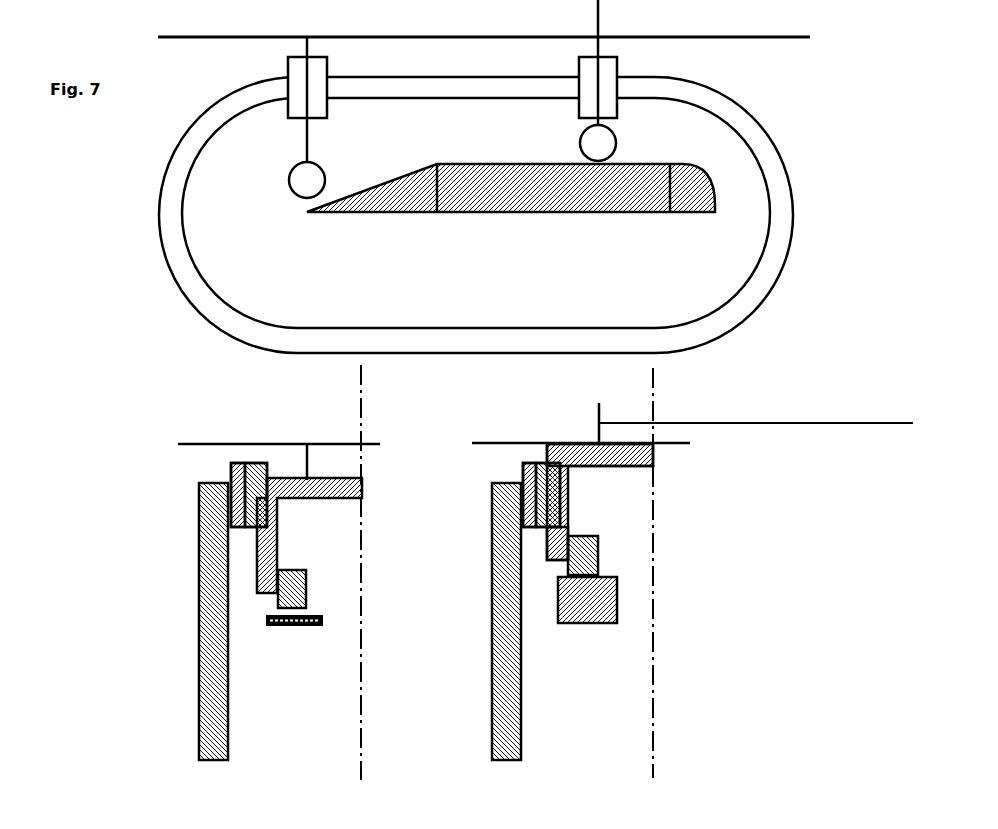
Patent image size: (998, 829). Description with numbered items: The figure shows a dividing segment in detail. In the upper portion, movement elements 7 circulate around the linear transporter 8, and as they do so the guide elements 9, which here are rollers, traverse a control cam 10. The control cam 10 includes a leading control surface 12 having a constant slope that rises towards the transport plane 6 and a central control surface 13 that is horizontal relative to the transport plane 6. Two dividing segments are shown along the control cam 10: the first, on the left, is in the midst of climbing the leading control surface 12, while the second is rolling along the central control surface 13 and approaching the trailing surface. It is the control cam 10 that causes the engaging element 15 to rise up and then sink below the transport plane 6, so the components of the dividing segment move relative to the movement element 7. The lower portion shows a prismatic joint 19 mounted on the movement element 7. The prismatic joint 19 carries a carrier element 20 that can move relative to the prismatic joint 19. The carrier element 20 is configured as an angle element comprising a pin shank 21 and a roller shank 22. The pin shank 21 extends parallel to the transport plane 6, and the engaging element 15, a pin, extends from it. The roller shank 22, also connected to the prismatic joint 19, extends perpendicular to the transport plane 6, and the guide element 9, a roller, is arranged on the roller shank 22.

The transport plane 6 is at (484, 227).
The movement element 7 is at (735, 516).
The linear transporter 8 is at (795, 210).
The guide element 9 is at (305, 181).
The control cam 10 is at (475, 200).
The leading control surface 12 is at (267, 620).
The central control surface 13 is at (607, 592).
The engaging element 15 is at (773, 429).
The prismatic joint 19 is at (553, 487).
The carrier element 20 is at (568, 468).
The pin shank 21 is at (567, 443).
The roller shank 22 is at (548, 541).